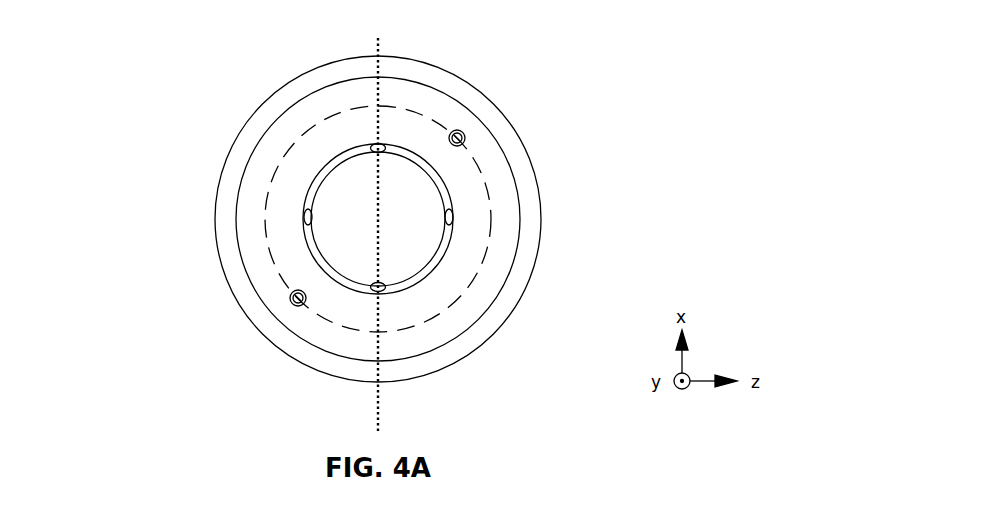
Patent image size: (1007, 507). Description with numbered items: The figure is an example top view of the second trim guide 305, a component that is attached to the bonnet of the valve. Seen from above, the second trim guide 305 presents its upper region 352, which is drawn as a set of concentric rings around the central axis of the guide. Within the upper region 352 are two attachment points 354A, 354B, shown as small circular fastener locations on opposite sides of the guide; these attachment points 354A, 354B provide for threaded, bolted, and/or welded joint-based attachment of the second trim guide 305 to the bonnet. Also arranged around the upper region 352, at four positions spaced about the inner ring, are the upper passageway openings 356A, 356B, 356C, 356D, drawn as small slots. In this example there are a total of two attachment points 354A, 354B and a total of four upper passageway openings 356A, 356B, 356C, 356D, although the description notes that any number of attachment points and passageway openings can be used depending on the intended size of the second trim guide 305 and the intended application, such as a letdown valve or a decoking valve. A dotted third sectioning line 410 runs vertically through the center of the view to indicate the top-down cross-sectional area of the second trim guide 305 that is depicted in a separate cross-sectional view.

The second trim guide 305 is at (122, 94).
The upper region 352 is at (537, 182).
The attachment point 354A is at (290, 299).
The attachment point 354B is at (459, 130).
The upper passageway opening 356A is at (304, 215).
The upper passageway opening 356B is at (378, 143).
The upper passageway opening 356C is at (453, 214).
The upper passageway opening 356D is at (385, 284).
The third sectioning line 410 is at (378, 415).